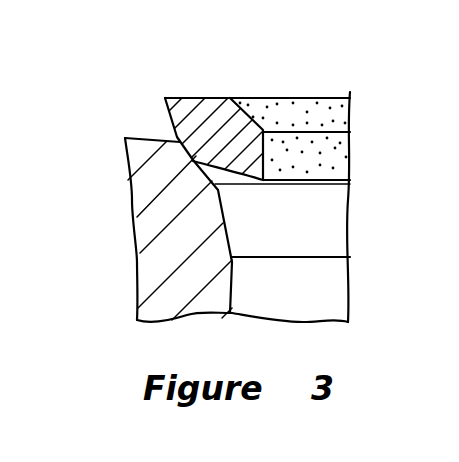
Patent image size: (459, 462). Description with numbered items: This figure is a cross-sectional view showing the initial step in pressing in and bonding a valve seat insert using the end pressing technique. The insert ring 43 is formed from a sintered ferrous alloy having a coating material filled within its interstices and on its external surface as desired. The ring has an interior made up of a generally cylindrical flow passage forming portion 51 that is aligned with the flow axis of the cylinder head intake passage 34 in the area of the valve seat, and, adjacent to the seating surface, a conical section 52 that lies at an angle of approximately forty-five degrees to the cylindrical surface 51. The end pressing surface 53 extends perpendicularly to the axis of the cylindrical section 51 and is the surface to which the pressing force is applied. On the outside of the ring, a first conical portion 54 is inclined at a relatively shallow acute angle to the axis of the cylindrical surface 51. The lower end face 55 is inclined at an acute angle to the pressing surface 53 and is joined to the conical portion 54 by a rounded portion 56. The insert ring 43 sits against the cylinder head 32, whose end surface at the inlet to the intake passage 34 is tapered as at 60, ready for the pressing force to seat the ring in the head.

The cylinder head 32 is at (160, 250).
The cylinder head intake passage 34 is at (265, 302).
The insert ring 43 is at (311, 98).
The cylindrical flow passage forming portion 51 is at (267, 157).
The conical section 52 is at (252, 108).
The end pressing surface 53 is at (193, 98).
The first conical portion 54 is at (168, 115).
The lower end face 55 is at (235, 181).
The rounded portion 56 is at (200, 157).
The tapered end surface 60 is at (217, 186).